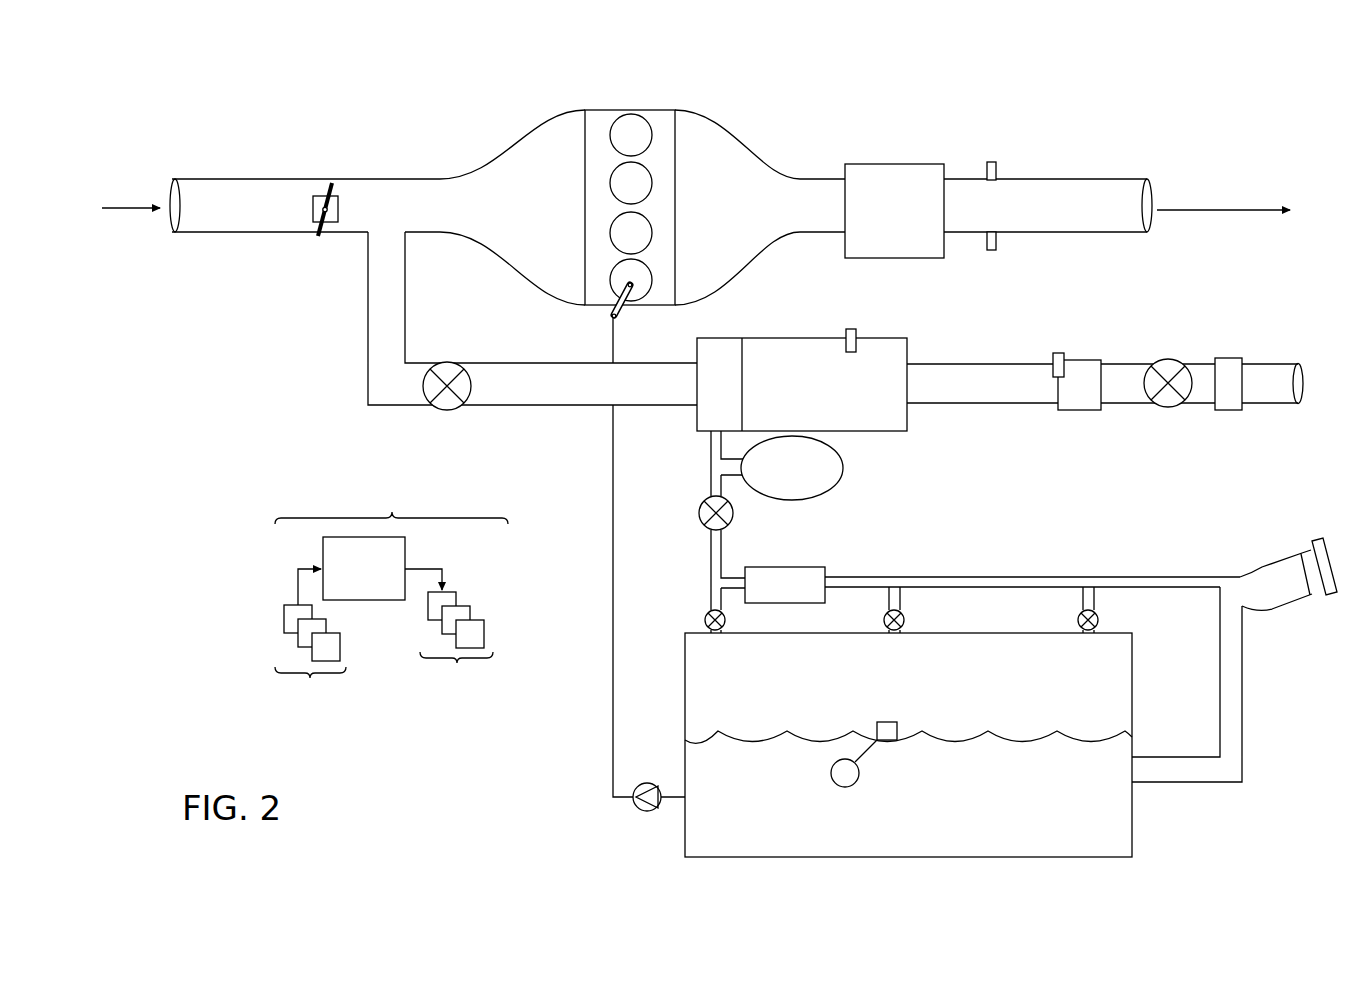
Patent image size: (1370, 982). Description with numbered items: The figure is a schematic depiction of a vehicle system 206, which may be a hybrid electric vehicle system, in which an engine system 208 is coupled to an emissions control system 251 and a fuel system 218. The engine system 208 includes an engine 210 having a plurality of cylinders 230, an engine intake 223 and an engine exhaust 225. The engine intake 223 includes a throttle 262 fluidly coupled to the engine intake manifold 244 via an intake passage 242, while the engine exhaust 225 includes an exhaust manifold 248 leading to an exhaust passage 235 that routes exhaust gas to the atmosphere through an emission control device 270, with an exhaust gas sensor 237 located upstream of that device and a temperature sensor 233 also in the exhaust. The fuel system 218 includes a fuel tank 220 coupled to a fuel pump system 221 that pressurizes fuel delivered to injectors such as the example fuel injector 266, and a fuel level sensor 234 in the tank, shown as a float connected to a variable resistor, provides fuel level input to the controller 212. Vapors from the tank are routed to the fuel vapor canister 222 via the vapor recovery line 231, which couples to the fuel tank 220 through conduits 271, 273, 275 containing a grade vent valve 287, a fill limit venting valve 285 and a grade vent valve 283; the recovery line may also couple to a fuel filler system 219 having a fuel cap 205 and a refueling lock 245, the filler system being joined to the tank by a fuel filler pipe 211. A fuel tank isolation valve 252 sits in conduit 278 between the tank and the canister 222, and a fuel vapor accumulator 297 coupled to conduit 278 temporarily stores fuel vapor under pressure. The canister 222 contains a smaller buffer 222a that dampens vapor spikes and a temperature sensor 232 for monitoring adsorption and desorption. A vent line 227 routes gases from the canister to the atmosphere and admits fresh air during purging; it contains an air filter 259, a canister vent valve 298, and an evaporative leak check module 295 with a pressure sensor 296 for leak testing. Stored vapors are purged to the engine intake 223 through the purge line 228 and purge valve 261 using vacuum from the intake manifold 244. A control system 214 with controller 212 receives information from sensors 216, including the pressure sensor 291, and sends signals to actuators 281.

The vehicle system 206 is at (188, 114).
The engine system 208 is at (957, 108).
The engine intake 223 is at (518, 138).
The engine exhaust 225 is at (836, 120).
The throttle 262 is at (339, 214).
The intake passage 242 is at (358, 234).
The engine intake manifold 244 is at (551, 217).
The cylinders 230 is at (650, 128).
The engine 210 is at (676, 195).
The exhaust manifold 248 is at (758, 217).
The fuel injector 266 is at (631, 312).
The emission control device 270 is at (878, 164).
The exhaust gas sensor 237 is at (985, 171).
The temperature sensor 233 is at (985, 243).
The exhaust passage 235 is at (1100, 179).
The purge valve 261 is at (450, 363).
The purge line 228 is at (560, 395).
The fuel vapor canister 222 is at (907, 357).
The buffer 222a is at (718, 338).
The temperature sensor 232 is at (846, 332).
The vent line 227 is at (988, 395).
The pressure sensor 296 is at (1056, 352).
The evaporative leak check module 295 is at (1082, 360).
The canister vent valve 298 is at (1166, 360).
The air filter 259 is at (1235, 358).
The emissions control system 251 is at (1287, 320).
The conduit 278 is at (711, 464).
The fuel vapor accumulator 297 is at (808, 478).
The fuel tank isolation valve 252 is at (708, 526).
The pressure sensor 291 is at (826, 573).
The vapor recovery line 231 is at (1140, 576).
The grade vent valve 287 is at (705, 619).
The conduit 271 is at (724, 596).
The conduit 273 is at (884, 602).
The fill limit venting valve 285 is at (905, 618).
The conduit 275 is at (1078, 600).
The grade vent valve 283 is at (1099, 618).
The fuel tank 220 is at (1132, 728).
The fuel level sensor 234 is at (891, 722).
The fuel pump system 221 is at (644, 782).
The fuel filler pipe 211 is at (1244, 680).
The fuel cap 205 is at (1317, 536).
The fuel filler system 219 is at (1291, 538).
The refueling lock 245 is at (1319, 598).
The fuel system 218 is at (1177, 818).
The control system 214 is at (391, 594).
The controller 212 is at (364, 568).
The sensors 216 is at (310, 644).
The actuators 281 is at (451, 636).